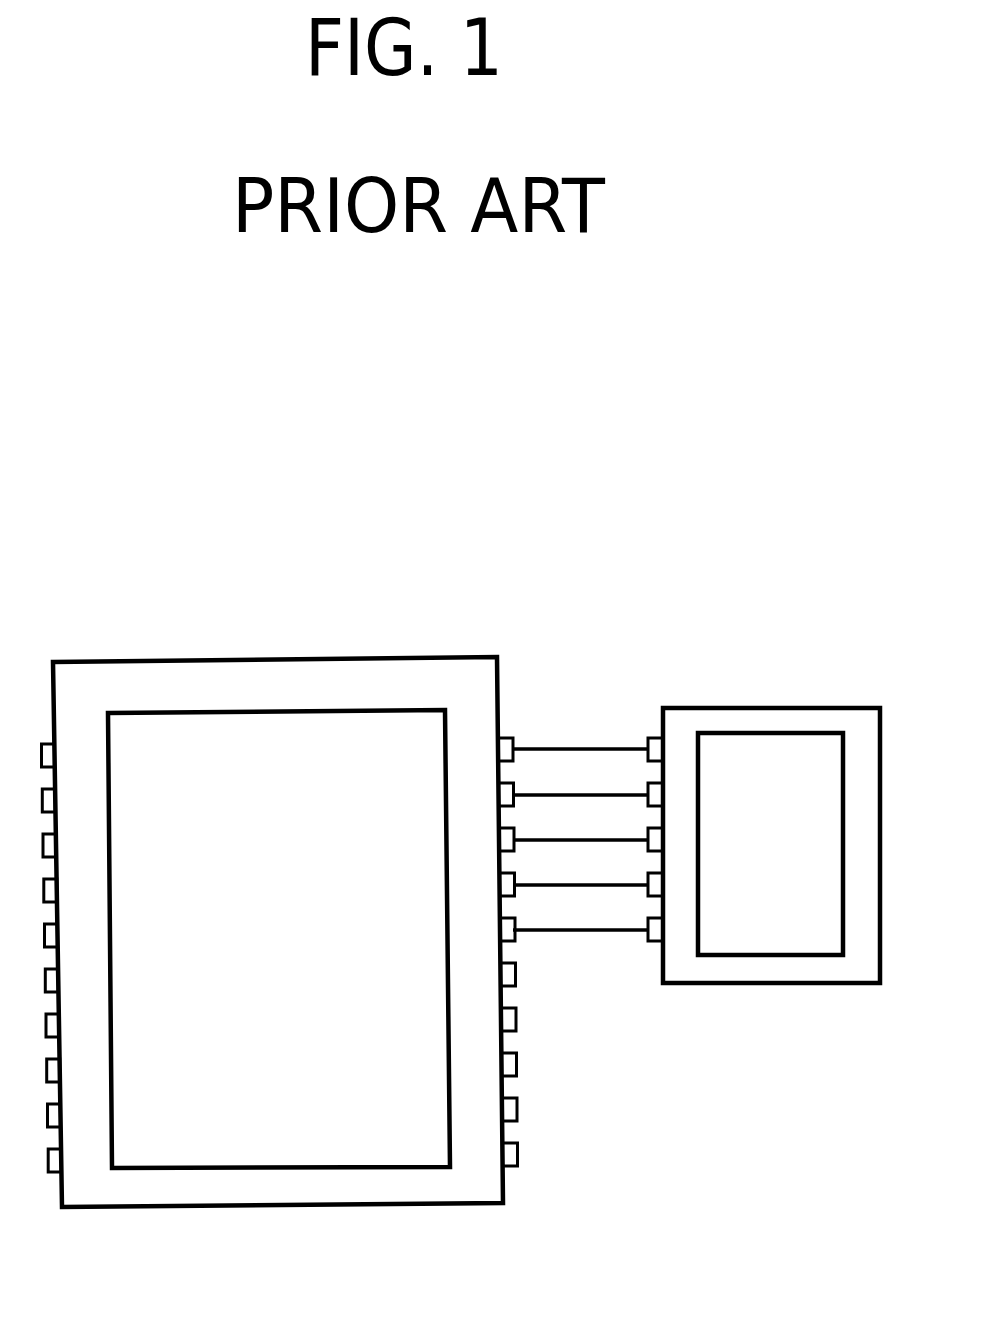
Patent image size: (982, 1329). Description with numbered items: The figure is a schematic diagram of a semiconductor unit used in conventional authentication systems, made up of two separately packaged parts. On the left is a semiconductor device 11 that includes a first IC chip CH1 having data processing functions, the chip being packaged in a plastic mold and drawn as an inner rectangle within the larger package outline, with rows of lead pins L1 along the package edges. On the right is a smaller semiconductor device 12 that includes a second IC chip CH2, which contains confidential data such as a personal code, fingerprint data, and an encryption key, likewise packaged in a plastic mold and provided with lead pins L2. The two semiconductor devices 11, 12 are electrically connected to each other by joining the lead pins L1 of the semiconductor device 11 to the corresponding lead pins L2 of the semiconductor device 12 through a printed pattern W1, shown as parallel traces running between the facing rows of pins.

The semiconductor device 11 is at (383, 660).
The semiconductor device 12 is at (808, 708).
The first IC chip CH1 is at (187, 713).
The second IC chip CH2 is at (782, 955).
The lead pins L1 is at (512, 738).
The lead pins L2 is at (649, 738).
The printed pattern W1 is at (577, 745).